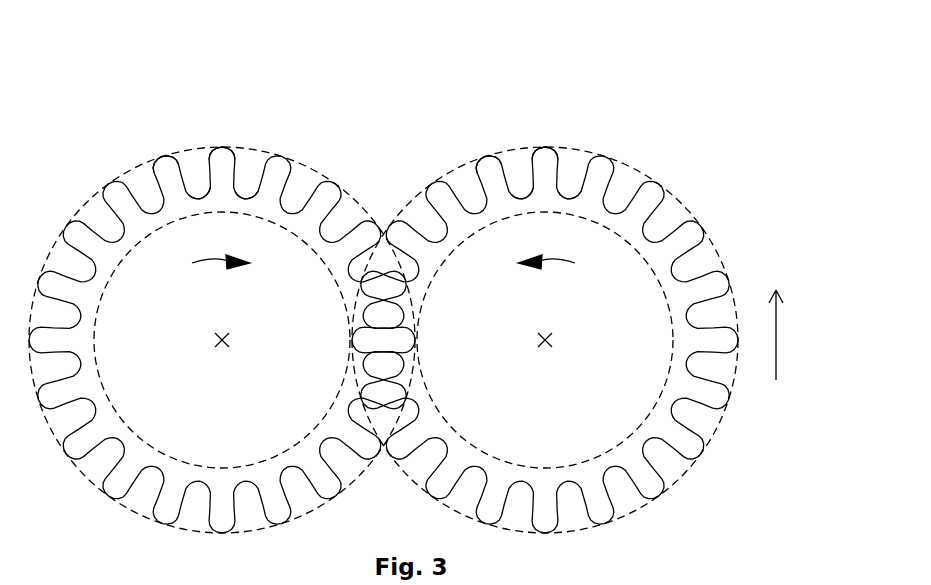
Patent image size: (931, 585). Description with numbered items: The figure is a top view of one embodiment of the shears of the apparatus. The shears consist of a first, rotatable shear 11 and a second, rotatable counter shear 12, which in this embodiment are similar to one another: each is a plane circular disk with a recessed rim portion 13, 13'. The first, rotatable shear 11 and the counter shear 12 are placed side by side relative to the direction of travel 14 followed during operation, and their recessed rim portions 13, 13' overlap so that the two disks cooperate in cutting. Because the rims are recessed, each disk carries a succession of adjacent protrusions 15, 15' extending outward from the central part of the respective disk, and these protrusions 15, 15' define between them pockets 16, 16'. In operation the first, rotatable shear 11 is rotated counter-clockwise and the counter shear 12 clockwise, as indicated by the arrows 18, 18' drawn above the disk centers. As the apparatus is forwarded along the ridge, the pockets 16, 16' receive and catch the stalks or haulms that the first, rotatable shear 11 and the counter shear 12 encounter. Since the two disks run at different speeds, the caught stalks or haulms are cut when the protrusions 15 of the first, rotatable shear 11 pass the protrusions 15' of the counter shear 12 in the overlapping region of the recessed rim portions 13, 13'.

The first, rotatable shear 11 is at (532, 429).
The second, rotatable counter shear 12 is at (238, 428).
The recessed rim portion 13 is at (545, 327).
The recessed rim portion 13' is at (222, 313).
The direction of travel 14 is at (777, 345).
The protrusion 15 is at (483, 113).
The protrusion 15' is at (160, 113).
The pocket 16 is at (508, 112).
The pocket 16' is at (187, 112).
The arrow 18 is at (560, 287).
The arrow 18' is at (222, 287).